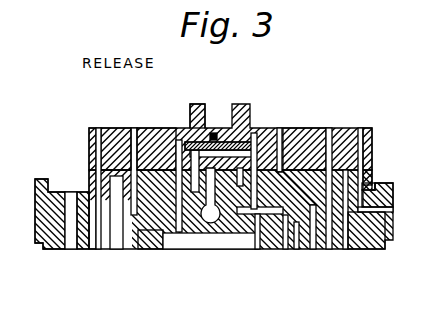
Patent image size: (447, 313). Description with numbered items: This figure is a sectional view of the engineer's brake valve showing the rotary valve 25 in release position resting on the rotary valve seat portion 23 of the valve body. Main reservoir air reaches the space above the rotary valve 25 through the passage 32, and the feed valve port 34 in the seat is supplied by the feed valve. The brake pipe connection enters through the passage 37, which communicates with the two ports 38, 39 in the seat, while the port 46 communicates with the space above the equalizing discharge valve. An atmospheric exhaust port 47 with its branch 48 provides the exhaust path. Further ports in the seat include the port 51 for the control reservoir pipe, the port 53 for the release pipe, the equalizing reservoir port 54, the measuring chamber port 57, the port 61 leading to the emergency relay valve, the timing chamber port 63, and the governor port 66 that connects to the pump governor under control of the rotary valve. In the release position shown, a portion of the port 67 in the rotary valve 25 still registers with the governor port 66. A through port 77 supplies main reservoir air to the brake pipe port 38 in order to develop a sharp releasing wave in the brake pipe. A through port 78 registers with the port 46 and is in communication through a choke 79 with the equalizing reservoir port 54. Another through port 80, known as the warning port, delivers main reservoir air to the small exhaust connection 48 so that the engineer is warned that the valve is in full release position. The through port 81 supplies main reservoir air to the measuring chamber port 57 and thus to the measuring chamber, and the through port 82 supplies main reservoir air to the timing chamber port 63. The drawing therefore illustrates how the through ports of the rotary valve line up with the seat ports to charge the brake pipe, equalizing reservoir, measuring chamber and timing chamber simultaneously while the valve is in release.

The rotary valve seat portion 23 is at (393, 197).
The rotary valve 25 is at (373, 137).
The passage 32 is at (67, 251).
The feed valve port 34 is at (117, 250).
The passage 37 is at (135, 250).
The brake pipe port 38 is at (98, 180).
The port 39 is at (148, 160).
The port 46 is at (178, 234).
The atmospheric exhaust port 47 is at (214, 239).
The branch 48 is at (194, 237).
The port 51 is at (255, 165).
The port 53 is at (303, 136).
The equalizing reservoir port 54 is at (258, 236).
The measuring chamber port 57 is at (341, 250).
The port 61 is at (349, 252).
The timing chamber port 63 is at (362, 183).
The governor port 66 is at (102, 250).
The port 67 is at (98, 146).
The through port 77 is at (131, 127).
The through port 78 is at (178, 146).
The choke 79 is at (214, 133).
The warning port 80 is at (279, 130).
The through port 81 is at (330, 130).
The through port 82 is at (362, 130).